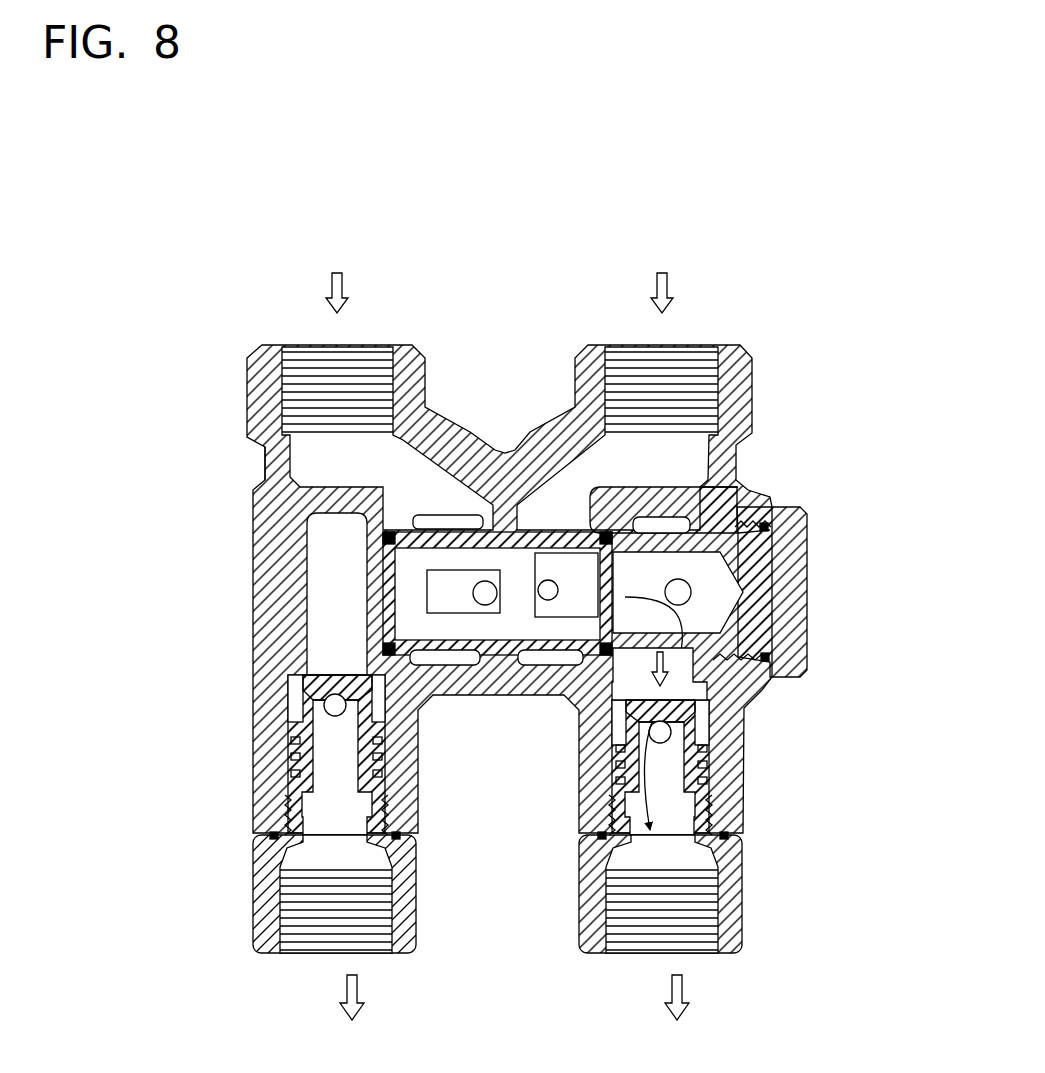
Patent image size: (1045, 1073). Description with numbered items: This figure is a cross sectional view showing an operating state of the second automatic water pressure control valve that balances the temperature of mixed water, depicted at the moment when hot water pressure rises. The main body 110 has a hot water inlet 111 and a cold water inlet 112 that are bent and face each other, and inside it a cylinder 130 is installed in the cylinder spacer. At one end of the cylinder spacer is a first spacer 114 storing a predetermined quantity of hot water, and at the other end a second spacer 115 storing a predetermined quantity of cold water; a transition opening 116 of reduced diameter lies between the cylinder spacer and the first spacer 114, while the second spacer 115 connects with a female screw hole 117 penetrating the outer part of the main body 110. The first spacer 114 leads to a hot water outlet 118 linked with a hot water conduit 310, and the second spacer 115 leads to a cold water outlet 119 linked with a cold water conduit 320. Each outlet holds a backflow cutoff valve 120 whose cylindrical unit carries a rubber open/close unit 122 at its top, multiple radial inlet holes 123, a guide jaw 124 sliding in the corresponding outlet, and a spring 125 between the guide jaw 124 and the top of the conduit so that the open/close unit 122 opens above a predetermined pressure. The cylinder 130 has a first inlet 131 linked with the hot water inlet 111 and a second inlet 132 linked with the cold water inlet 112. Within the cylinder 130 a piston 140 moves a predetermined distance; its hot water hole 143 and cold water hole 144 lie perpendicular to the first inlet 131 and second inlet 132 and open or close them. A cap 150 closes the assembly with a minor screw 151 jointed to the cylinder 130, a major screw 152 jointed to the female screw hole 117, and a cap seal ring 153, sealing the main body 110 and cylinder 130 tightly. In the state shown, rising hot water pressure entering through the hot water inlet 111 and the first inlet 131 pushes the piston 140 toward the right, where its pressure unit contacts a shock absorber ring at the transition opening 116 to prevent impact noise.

The main body 110 is at (497, 390).
The hot water inlet 111 is at (313, 360).
The cold water inlet 112 is at (688, 365).
The first spacer 114 is at (355, 545).
The second spacer 115 is at (722, 497).
The transition opening 116 is at (390, 610).
The female screw hole 117 is at (752, 513).
The hot water outlet 118 is at (295, 700).
The cold water outlet 119 is at (745, 690).
The backflow cutoff valve 120 is at (303, 778).
The open/close unit 122 is at (300, 672).
The inlet holes 123 is at (315, 682).
The guide jaw 124 is at (300, 735).
The spring 125 is at (300, 752).
The cylinder 130 is at (690, 520).
The first inlet 131 is at (318, 528).
The second inlet 132 is at (660, 495).
The piston 140 is at (430, 572).
The hot water hole 143 is at (405, 532).
The cold water hole 144 is at (555, 528).
The cap 150 is at (797, 598).
The minor screw 151 is at (807, 645).
The major screw 152 is at (807, 550).
The cap seal ring 153 is at (808, 518).
The hot water conduit 310 is at (265, 880).
The cold water conduit 320 is at (735, 882).